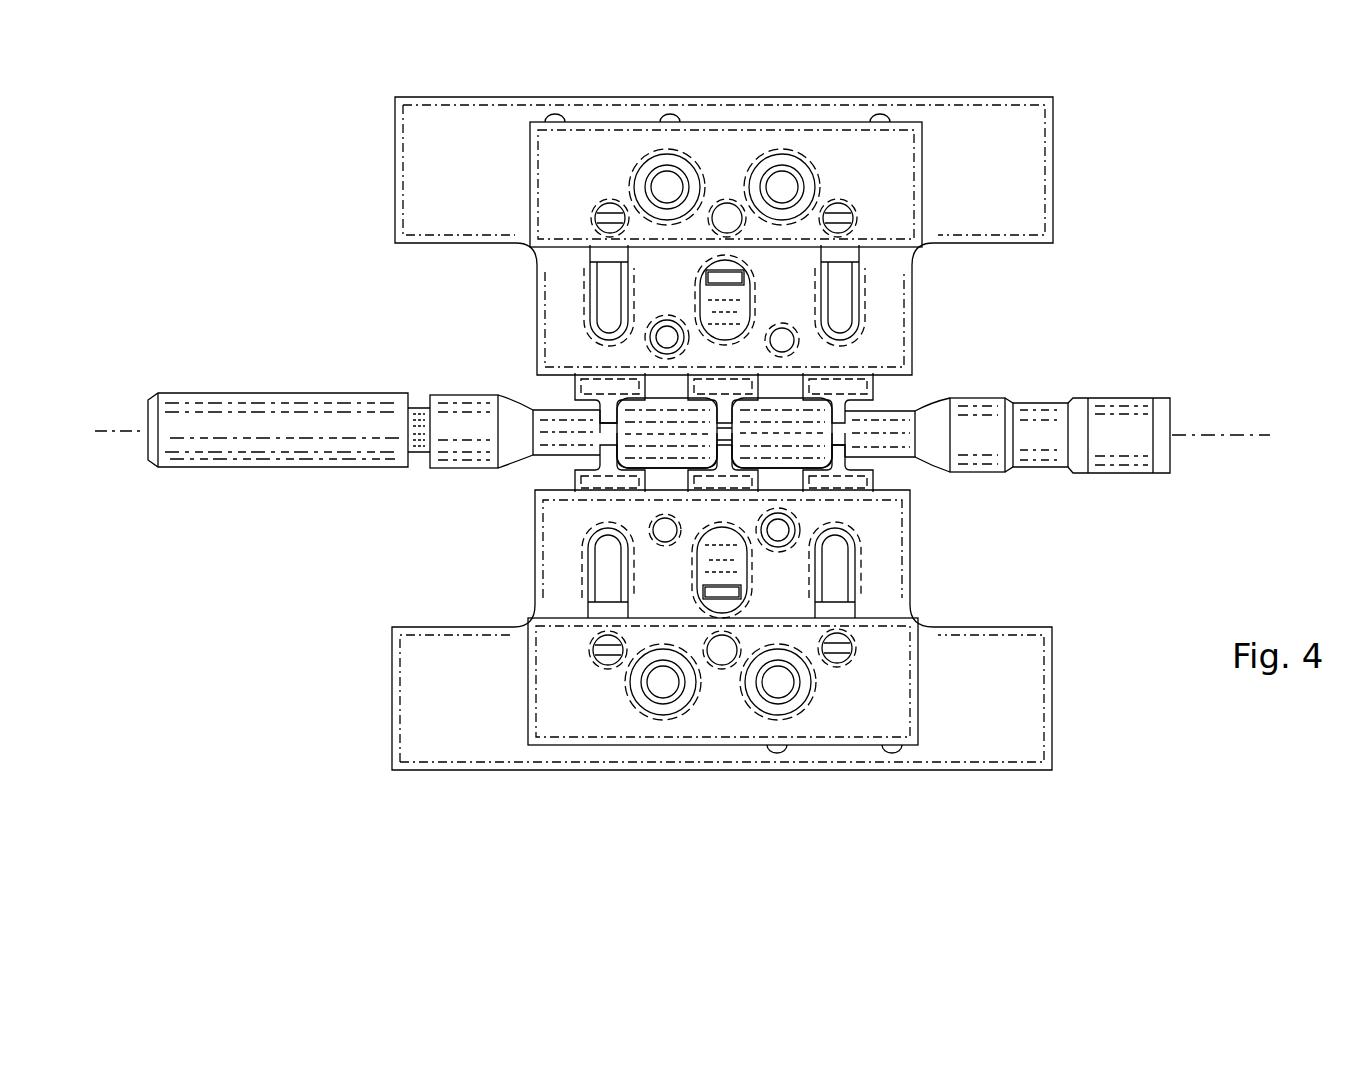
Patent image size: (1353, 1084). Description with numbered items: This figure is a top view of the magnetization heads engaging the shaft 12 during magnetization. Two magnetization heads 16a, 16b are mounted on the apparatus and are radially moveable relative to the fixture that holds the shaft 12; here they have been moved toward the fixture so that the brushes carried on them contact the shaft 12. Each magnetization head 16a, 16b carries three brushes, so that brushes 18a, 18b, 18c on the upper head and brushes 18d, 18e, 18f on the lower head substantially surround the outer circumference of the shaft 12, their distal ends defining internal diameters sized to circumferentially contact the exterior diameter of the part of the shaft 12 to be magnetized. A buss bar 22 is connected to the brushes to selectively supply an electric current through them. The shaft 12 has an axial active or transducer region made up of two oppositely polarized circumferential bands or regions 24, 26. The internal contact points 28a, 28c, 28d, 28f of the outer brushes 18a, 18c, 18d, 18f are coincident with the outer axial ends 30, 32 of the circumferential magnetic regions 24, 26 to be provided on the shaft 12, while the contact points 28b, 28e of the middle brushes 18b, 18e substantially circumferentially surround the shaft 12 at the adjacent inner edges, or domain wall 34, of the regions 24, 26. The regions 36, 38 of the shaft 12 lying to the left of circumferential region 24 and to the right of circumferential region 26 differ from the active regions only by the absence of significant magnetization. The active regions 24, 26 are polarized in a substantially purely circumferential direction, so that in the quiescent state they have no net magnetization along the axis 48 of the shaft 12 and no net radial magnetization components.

The shaft 12 is at (230, 452).
The magnetization head 16a is at (885, 318).
The magnetization head 16b is at (885, 572).
The brush 18a is at (605, 388).
The brush 18b is at (720, 408).
The brush 18c is at (840, 390).
The brush 18d is at (610, 477).
The brush 18e is at (722, 480).
The brush 18f is at (843, 482).
The buss bar 22 is at (724, 300).
The circumferential region 24 is at (728, 448).
The circumferential region 26 is at (790, 430).
The internal contact point 28a is at (602, 420).
The contact point 28b is at (665, 398).
The internal contact point 28c is at (830, 420).
The internal contact point 28d is at (647, 440).
The contact point 28e is at (735, 448).
The internal contact point 28f is at (845, 455).
The outer axial end 30 is at (507, 410).
The outer axial end 32 is at (870, 412).
The domain wall 34 is at (640, 468).
The region 36 is at (463, 405).
The region 38 is at (985, 420).
The axis 48 is at (1205, 435).